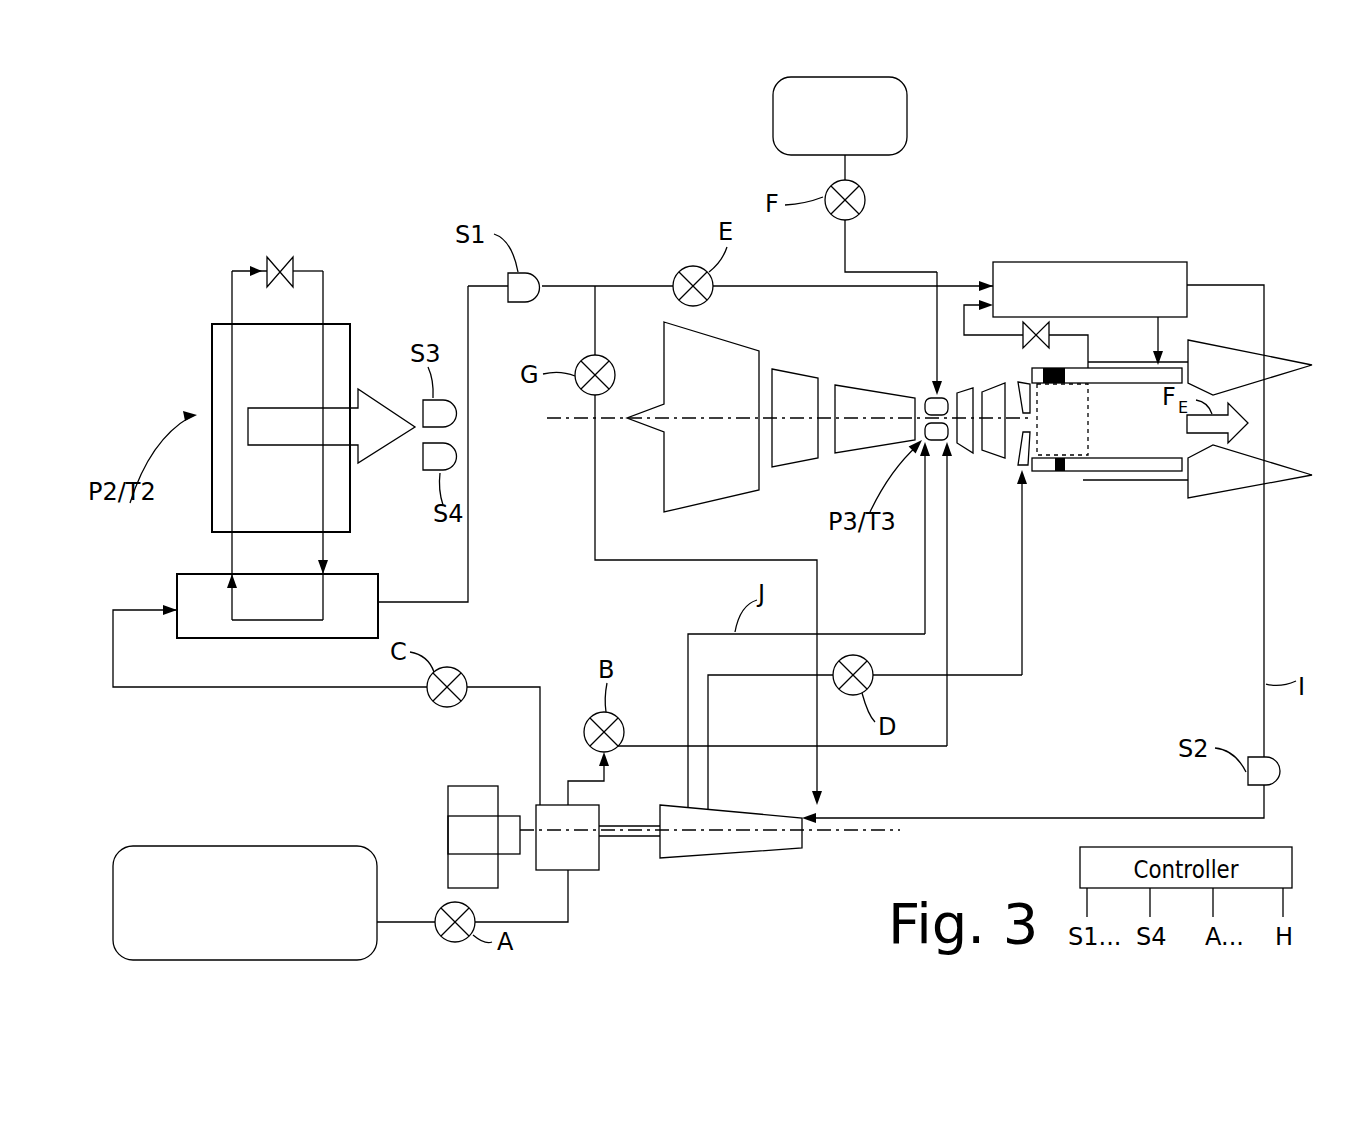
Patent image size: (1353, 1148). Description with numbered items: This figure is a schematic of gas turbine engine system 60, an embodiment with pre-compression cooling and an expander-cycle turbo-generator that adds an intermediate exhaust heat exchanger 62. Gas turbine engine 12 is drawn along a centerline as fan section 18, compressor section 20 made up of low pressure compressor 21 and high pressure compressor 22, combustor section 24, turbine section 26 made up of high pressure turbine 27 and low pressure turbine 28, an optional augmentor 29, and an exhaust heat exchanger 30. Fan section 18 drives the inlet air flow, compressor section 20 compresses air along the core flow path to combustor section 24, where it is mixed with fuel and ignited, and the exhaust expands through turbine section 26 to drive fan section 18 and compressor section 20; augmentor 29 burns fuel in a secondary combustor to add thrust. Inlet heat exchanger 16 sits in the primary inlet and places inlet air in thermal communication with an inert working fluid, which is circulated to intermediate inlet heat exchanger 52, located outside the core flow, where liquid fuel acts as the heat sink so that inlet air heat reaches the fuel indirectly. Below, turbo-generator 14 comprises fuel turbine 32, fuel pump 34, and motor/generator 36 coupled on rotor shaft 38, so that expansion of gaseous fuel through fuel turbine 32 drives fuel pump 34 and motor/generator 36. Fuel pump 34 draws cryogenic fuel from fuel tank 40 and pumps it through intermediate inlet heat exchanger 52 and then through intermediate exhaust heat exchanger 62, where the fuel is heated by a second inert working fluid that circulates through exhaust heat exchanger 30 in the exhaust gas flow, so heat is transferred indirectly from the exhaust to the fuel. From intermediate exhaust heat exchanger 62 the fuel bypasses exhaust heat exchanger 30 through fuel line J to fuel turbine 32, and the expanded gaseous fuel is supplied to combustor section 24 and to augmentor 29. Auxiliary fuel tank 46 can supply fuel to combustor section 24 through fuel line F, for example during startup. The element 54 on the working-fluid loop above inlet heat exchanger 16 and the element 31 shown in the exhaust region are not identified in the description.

The gas turbine engine system 60 is at (225, 192).
The valve 54 is at (268, 258).
The inlet heat exchanger 16 is at (298, 487).
The intermediate inlet heat exchanger 52 is at (186, 572).
The auxiliary fuel tank 46 is at (858, 76).
The intermediate exhaust heat exchanger 62 is at (1105, 301).
The gas turbine engine 12 is at (929, 419).
The fan section 18 is at (740, 467).
The compressor section 20 is at (843, 397).
The low pressure compressor 21 is at (808, 452).
The high pressure compressor 22 is at (871, 446).
The combustor section 24 is at (928, 396).
The turbine section 26 is at (982, 434).
The high pressure turbine 27 is at (964, 456).
The low pressure turbine 28 is at (990, 460).
The augmentor 29 is at (1036, 443).
The exhaust heat exchanger 30 is at (1043, 470).
The afterburner region 31 is at (1088, 402).
The turbo-generator 14 is at (674, 853).
The fuel turbine 32 is at (715, 858).
The fuel pump 34 is at (580, 870).
The motor/generator 36 is at (498, 851).
The rotor shaft 38 is at (622, 822).
The fuel tank 40 is at (226, 947).